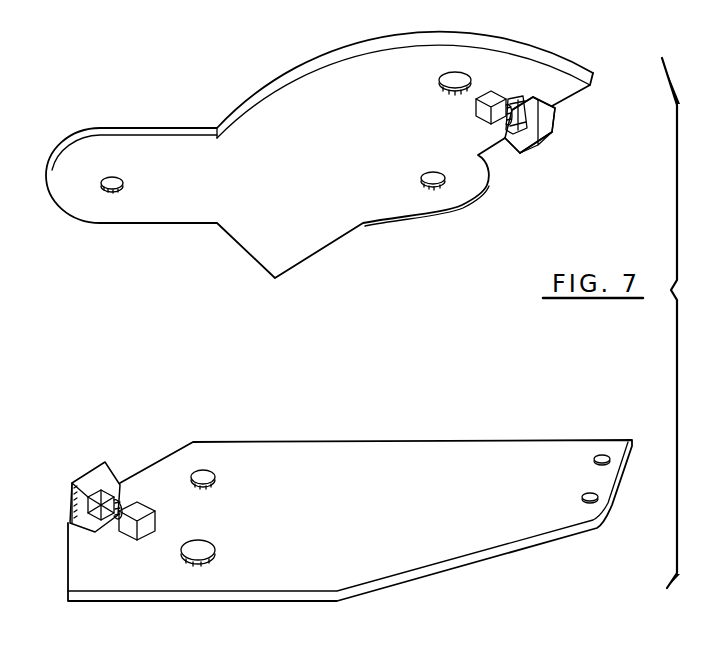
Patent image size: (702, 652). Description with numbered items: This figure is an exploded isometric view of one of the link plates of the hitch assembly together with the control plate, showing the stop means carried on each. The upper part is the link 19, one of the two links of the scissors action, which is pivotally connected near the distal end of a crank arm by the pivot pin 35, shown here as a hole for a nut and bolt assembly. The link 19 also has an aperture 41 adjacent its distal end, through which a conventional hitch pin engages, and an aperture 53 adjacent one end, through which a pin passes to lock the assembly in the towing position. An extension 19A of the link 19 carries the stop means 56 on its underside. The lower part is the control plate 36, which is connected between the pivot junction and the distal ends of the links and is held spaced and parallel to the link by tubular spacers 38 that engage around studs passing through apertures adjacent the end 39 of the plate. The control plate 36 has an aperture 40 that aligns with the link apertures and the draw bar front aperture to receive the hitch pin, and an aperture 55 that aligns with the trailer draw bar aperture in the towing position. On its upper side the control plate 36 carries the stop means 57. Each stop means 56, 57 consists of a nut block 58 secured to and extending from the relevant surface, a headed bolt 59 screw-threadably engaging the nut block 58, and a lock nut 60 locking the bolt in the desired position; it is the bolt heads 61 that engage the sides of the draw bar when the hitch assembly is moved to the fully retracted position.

The link 19 is at (350, 240).
The extension of the link 19A is at (562, 82).
The pivot pin 35 is at (124, 185).
The control plate 36 is at (385, 443).
The tubular spacers 38 is at (596, 450).
The end of the control plate 39 is at (568, 523).
The aperture 40 is at (217, 477).
The aperture 41 is at (423, 185).
The aperture 53 is at (447, 91).
The aperture 55 is at (218, 548).
The stop means 56 is at (542, 153).
The stop means 57 is at (108, 446).
The nut block 58 is at (553, 110).
The headed bolt 59 is at (500, 127).
The lock nut 60 is at (510, 103).
The bolt head 61 is at (486, 108).